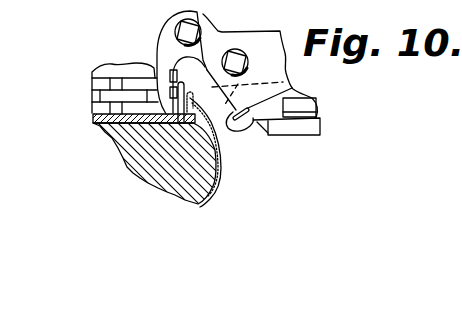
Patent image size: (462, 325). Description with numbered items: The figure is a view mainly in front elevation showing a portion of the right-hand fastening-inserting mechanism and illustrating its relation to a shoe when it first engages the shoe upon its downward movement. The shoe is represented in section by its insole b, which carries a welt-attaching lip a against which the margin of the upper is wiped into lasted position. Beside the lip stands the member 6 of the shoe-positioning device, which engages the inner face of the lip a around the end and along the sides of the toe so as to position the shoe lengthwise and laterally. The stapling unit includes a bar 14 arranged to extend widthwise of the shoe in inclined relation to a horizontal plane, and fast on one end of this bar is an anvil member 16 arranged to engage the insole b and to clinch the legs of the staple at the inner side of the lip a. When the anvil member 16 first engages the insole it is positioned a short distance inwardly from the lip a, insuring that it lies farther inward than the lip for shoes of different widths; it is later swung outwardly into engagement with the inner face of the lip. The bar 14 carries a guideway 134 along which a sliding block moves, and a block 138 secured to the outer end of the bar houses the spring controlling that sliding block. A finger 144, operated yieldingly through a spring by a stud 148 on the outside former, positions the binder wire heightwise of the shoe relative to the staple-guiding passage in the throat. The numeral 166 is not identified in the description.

The bar 14 is at (250, 44).
The anvil member 16 is at (158, 52).
The member 6 is at (214, 88).
The finger 144 is at (250, 126).
The stud 148 is at (13, 0).
The block 138 is at (282, 4).
The guideway 134 is at (339, 7).
The member 166 is at (398, 7).
The welt-attaching lip a is at (183, 131).
The insole b is at (95, 119).